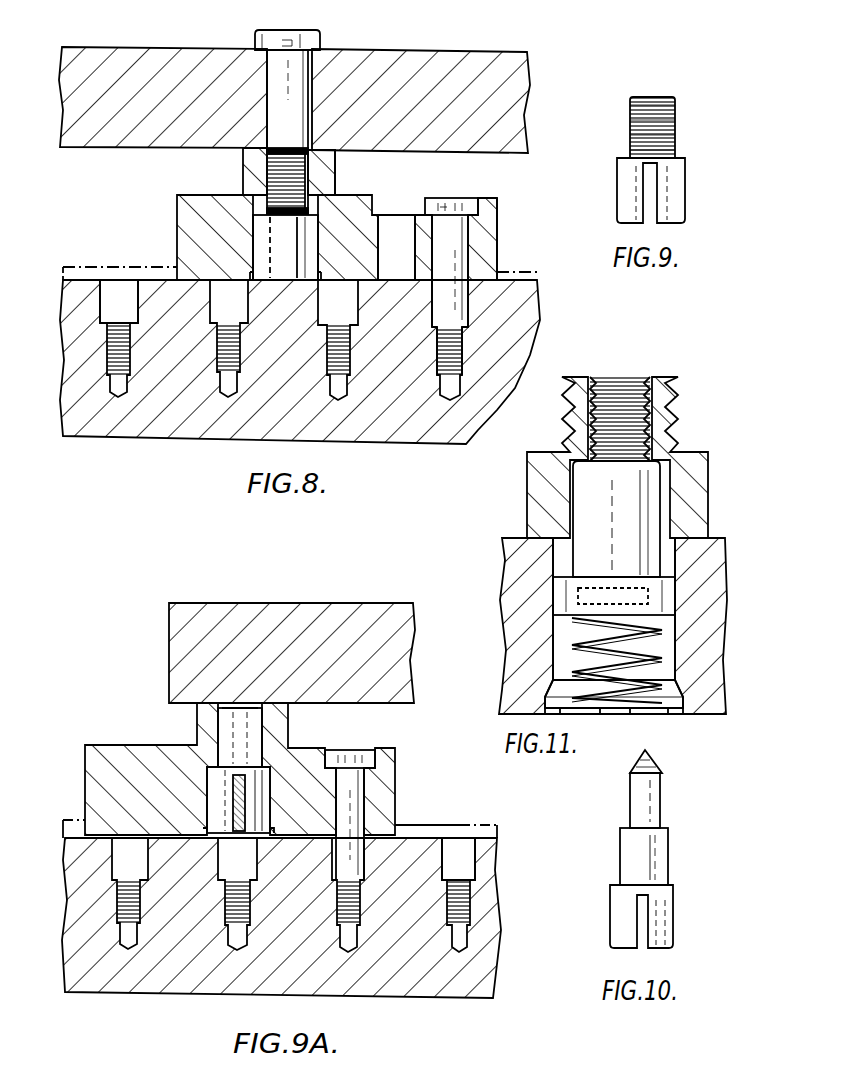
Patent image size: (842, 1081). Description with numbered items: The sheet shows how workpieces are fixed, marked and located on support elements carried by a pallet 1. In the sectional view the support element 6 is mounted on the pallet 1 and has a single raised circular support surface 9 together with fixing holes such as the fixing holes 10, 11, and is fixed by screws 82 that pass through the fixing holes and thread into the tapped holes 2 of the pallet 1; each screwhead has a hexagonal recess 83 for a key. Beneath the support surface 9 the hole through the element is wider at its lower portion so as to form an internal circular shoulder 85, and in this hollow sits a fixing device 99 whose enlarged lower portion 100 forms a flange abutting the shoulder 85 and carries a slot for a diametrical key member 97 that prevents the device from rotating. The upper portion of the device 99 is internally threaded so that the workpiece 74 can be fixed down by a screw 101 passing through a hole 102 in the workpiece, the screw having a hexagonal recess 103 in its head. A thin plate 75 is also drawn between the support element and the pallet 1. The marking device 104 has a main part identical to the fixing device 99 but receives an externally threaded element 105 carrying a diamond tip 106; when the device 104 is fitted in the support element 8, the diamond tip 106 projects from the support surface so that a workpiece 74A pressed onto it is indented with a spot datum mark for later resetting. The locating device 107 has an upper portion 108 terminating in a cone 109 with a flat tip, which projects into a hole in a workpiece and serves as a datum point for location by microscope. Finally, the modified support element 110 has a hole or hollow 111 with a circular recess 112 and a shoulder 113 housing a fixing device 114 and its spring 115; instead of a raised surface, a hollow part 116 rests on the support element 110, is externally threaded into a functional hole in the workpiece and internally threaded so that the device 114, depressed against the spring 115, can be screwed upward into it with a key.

In FIG. 8, the pallet 1 is at (525, 334).
In FIG. 9A, the pallet 1 is at (101, 970).
In FIG. 8, the tapped holes 2 is at (118, 290).
In FIG. 9A, the tapped holes 2 is at (472, 837).
In FIG. 8, the support element 6 is at (487, 263).
In FIG. 9A, the support element 8 is at (110, 747).
In FIG. 8, the raised circular support surface 9 is at (250, 138).
In FIG. 8, the fixing hole 10 is at (405, 220).
In FIG. 8, the fixing hole 11 is at (496, 224).
In FIG. 8, the workpiece 74 is at (445, 53).
In FIG. 9A, the workpiece 74A is at (345, 604).
In FIG. 8, the shim plate 75 is at (88, 266).
In FIG. 9A, the shim plate 75 is at (280, 829).
In FIG. 8, the screws 82 is at (465, 250).
In FIG. 9A, the screws 82 is at (353, 808).
In FIG. 8, the recess 83 is at (452, 197).
In FIG. 8, the internal circular shoulder 85 is at (333, 197).
In FIG. 8, the diametrical key member 97 is at (338, 251).
In FIG. 8, the fixing device 99 is at (266, 173).
In FIG. 8, the lower portion 100 is at (260, 235).
In FIG. 8, the screw 101 is at (277, 92).
In FIG. 8, the hole 102 is at (313, 62).
In FIG. 8, the recess 103 is at (288, 28).
In FIG. 9, the marking device 104 is at (622, 182).
In FIG. 9A, the marking device 104 is at (253, 790).
In FIG. 9, the externally threaded element 105 is at (638, 118).
In FIG. 9, the diamond tip 106 is at (655, 95).
In FIG. 9A, the diamond tip 106 is at (240, 707).
In FIG. 10, the locating device 107 is at (628, 865).
In FIG. 10, the upper portion 108 is at (637, 807).
In FIG. 10, the cone 109 is at (640, 763).
In FIG. 11, the support element 110 is at (512, 542).
In FIG. 11, the hole or hollow 111 is at (560, 640).
In FIG. 11, the circular recess 112 is at (545, 698).
In FIG. 11, the shoulder 113 is at (553, 587).
In FIG. 11, the fixing device 114 is at (585, 487).
In FIG. 11, the spring 115 is at (580, 677).
In FIG. 11, the hollow part 116 is at (547, 455).